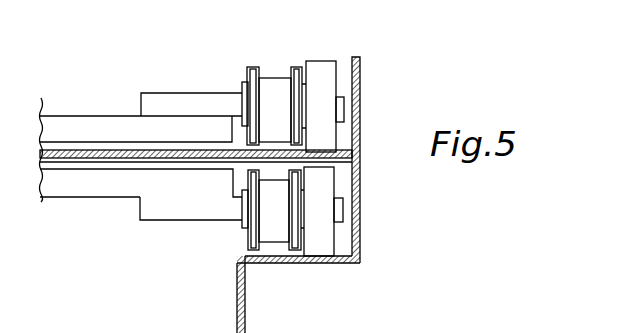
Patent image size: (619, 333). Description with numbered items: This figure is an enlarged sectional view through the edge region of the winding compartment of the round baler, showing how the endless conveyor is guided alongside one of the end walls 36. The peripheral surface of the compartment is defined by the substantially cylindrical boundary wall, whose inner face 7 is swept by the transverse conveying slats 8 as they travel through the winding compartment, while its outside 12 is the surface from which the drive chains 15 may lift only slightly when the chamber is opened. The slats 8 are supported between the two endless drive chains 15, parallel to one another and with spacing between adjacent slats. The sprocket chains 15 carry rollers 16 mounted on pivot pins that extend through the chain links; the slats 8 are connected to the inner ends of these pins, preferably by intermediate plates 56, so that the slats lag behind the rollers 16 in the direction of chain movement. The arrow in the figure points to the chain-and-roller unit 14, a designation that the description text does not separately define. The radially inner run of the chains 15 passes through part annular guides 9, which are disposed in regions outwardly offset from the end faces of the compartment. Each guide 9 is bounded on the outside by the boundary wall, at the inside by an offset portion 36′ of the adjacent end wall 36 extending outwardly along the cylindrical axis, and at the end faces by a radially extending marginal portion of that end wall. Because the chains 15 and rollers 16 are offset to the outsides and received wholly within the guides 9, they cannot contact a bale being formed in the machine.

The inner face of the boundary wall 7 is at (205, 161).
The transverse conveying slats 8 is at (60, 119).
The part annular guides 9 is at (343, 186).
The outside of the boundary wall 12 is at (122, 149).
The pulley assembly 14 is at (259, 87).
The drive chains 15 is at (249, 68).
The rollers 16 is at (322, 64).
The end walls 36 is at (245, 313).
The offset portions of the end walls 36′ is at (333, 263).
The intermediate plates 56 is at (158, 220).